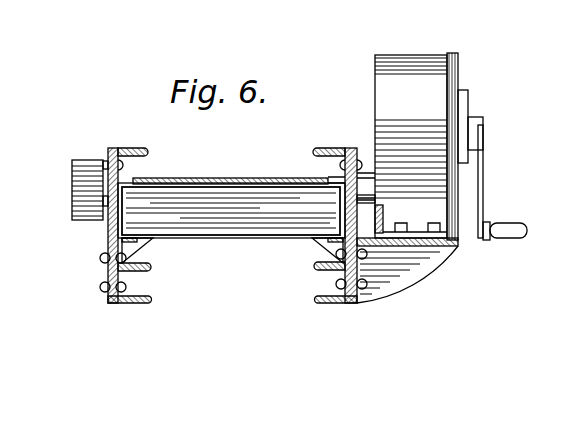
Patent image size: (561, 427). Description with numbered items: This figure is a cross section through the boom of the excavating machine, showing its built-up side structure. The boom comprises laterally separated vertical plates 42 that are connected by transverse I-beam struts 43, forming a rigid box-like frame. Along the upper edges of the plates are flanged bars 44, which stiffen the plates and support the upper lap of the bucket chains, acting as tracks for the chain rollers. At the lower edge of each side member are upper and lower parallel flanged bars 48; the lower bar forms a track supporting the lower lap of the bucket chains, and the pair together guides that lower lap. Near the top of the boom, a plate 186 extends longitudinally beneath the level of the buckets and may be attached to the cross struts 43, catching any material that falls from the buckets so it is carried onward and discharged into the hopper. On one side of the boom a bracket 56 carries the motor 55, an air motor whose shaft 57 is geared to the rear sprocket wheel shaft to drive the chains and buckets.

The vertical plates 42 is at (112, 241).
The transverse I-beam struts 43 is at (267, 232).
The flanged bars 44 is at (143, 148).
The upper and lower parallel flanged bars 48 is at (150, 268).
The motor 55 is at (452, 80).
The bracket 56 is at (393, 250).
The shaft 57 is at (103, 186).
The plate 186 is at (213, 168).